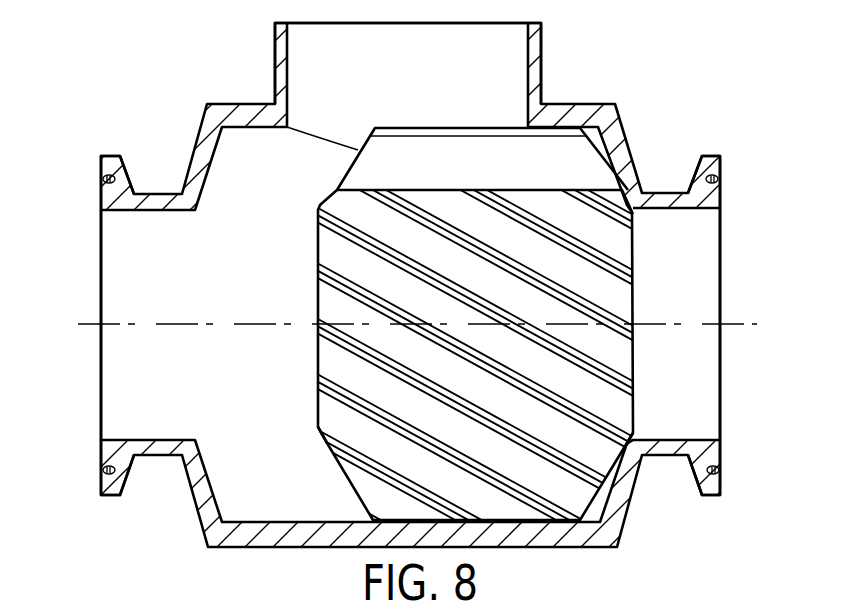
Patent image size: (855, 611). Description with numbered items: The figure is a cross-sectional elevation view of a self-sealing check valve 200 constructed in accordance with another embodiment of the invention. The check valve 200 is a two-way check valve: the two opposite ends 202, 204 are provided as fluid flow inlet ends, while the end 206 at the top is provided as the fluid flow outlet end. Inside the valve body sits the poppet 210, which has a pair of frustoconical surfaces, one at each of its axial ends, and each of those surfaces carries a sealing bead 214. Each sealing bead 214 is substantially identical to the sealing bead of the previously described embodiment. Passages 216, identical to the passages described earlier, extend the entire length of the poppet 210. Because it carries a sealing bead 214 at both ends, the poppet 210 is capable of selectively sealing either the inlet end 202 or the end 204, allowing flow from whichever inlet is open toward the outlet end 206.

The check valve 200 is at (668, 98).
The inlet end 202 is at (717, 178).
The inlet end 204 is at (100, 179).
The outlet end 206 is at (333, 23).
The poppet 210 is at (637, 373).
The sealing bead 214 is at (327, 444).
The passages 216 is at (477, 165).